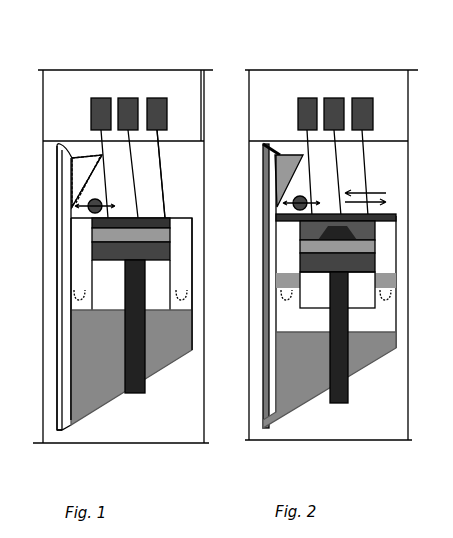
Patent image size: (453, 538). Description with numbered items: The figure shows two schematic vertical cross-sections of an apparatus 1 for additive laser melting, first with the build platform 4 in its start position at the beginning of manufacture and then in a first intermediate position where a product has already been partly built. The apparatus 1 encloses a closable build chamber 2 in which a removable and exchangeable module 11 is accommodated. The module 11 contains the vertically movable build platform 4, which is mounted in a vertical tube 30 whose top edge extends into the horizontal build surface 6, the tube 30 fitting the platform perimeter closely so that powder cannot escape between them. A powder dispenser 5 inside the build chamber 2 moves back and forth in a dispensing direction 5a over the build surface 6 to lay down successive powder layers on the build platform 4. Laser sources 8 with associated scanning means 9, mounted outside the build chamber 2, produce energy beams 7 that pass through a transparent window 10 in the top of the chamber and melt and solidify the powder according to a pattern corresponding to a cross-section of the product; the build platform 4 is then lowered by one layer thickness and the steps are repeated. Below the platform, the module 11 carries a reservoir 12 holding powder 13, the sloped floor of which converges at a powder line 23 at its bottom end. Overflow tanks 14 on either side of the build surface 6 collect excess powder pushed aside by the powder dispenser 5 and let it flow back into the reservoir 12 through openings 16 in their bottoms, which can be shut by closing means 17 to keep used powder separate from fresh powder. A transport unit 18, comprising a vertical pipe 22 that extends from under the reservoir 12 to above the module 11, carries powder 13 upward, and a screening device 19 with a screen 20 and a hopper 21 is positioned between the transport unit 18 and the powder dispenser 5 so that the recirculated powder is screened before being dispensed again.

In FIG. 1, the apparatus 1 is at (110, 70).
In FIG. 2, the build chamber 2 is at (398, 178).
In FIG. 1, the build platform 4 is at (90, 255).
In FIG. 1, the powder dispenser 5 is at (86, 208).
In FIG. 2, the dispensing direction 5a is at (383, 180).
In FIG. 1, the build surface 6 is at (180, 218).
In FIG. 1, the energy beam 7 is at (165, 183).
In FIG. 1, the laser source 8 is at (95, 99).
In FIG. 2, the laser source 8 is at (367, 97).
In FIG. 1, the scanning means 9 is at (90, 118).
In FIG. 1, the transparent window 10 is at (176, 141).
In FIG. 1, the module 11 is at (185, 363).
In FIG. 2, the module 11 is at (396, 212).
In FIG. 1, the reservoir 12 is at (70, 360).
In FIG. 1, the powder 13 is at (160, 345).
In FIG. 2, the powder 13 is at (371, 362).
In FIG. 1, the overflow tank 14 is at (85, 283).
In FIG. 2, the overflow tank 14 is at (390, 238).
In FIG. 2, the opening 16 is at (381, 293).
In FIG. 2, the closing means 17 is at (385, 297).
In FIG. 1, the transport unit 18 is at (58, 383).
In FIG. 2, the screening device 19 is at (288, 148).
In FIG. 1, the screen 20 is at (80, 165).
In FIG. 1, the hopper 21 is at (78, 175).
In FIG. 2, the vertical pipe 22 is at (452, 378).
In FIG. 2, the powder line 23 is at (452, 470).
In FIG. 2, the vertical tube 30 is at (298, 302).